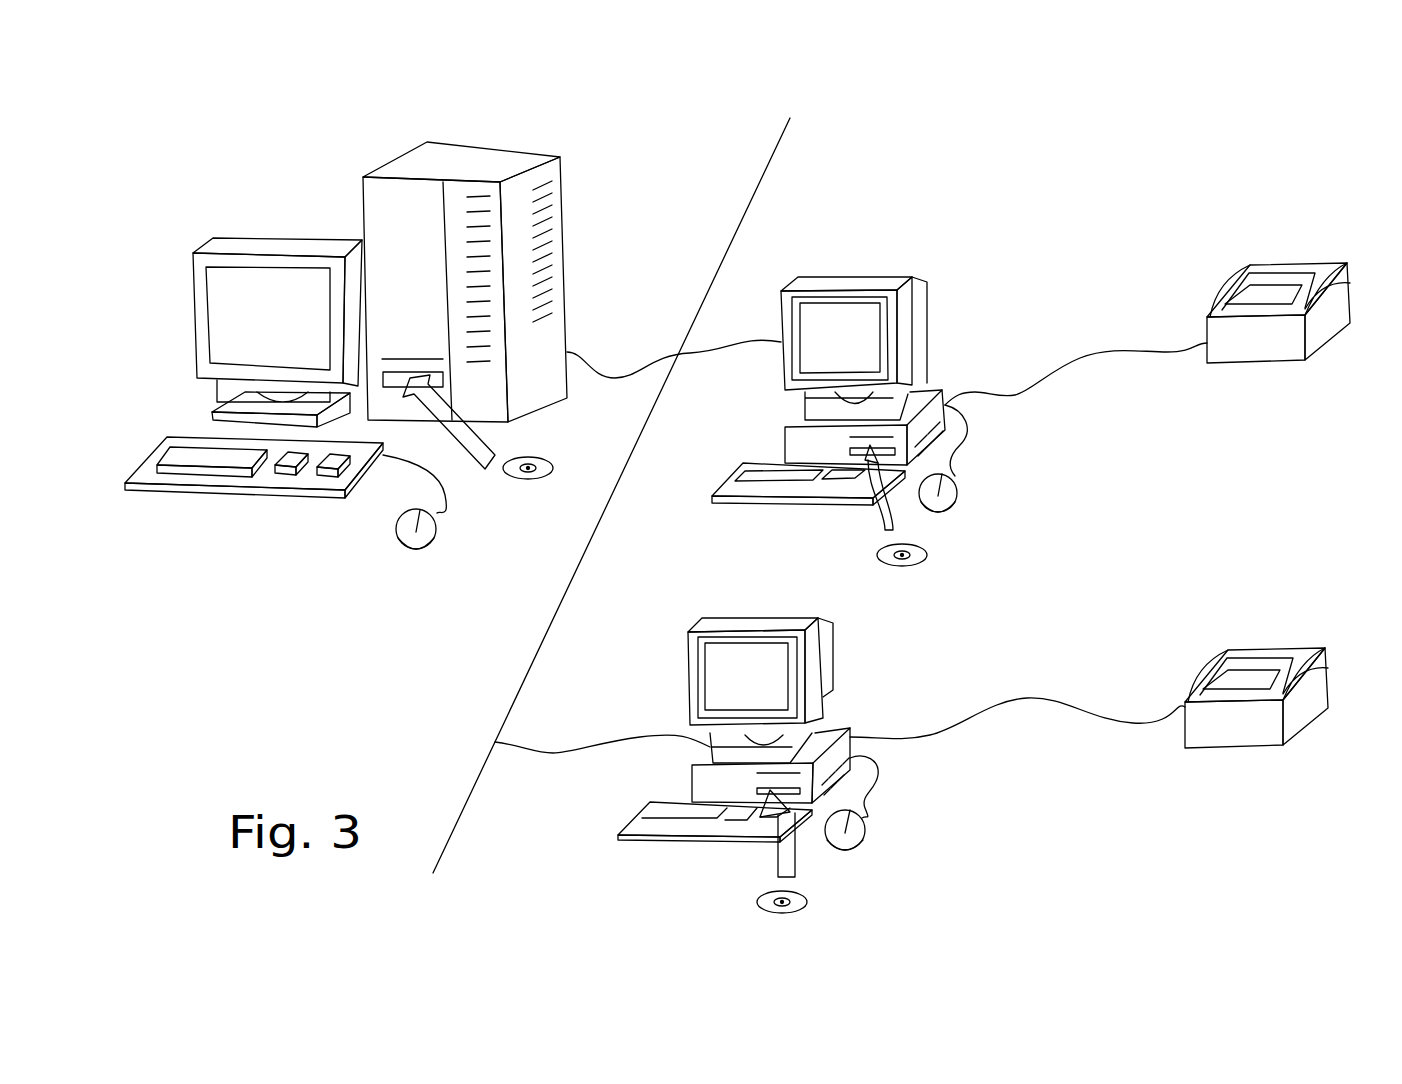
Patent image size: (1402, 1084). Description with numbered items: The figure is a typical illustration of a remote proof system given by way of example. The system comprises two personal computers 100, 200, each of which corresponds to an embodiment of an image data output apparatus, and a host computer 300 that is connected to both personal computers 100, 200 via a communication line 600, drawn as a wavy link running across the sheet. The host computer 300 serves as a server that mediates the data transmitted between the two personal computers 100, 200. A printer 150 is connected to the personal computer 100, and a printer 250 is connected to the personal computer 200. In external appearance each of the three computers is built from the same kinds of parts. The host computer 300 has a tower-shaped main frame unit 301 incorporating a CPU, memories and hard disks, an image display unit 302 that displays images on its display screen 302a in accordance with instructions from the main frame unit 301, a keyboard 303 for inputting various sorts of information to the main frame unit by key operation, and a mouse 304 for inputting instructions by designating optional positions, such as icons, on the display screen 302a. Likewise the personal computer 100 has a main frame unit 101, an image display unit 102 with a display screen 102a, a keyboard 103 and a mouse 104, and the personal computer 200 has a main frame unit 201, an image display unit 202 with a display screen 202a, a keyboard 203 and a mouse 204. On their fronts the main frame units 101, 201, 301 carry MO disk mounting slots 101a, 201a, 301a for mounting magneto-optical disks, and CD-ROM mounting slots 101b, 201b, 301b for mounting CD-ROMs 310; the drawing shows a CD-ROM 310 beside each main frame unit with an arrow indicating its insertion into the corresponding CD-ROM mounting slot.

The host computer 300 is at (268, 195).
The main frame unit 301 is at (470, 153).
The MO disk mounting slot 301a is at (395, 359).
The CD-ROM mounting slot 301b is at (442, 372).
The image display unit 302 is at (203, 243).
The display screen 302a is at (238, 332).
The keyboard 303 is at (183, 498).
The mouse 304 is at (425, 544).
The CD-ROM 310 is at (533, 455).
The communication line 600 is at (783, 146).
The personal computer 100 is at (945, 260).
The main frame unit 101 is at (928, 390).
The MO disk mounting slot 101a is at (853, 437).
The CD-ROM mounting slot 101b is at (850, 452).
The image display unit 102 is at (877, 275).
The display screen 102a is at (828, 325).
The keyboard 103 is at (743, 507).
The mouse 104 is at (935, 515).
The printer 150 is at (1315, 242).
The personal computer 200 is at (853, 682).
The main frame unit 201 is at (832, 730).
The MO disk mounting slot 201a is at (757, 774).
The CD-ROM mounting slot 201b is at (757, 790).
The image display unit 202 is at (690, 628).
The display screen 202a is at (713, 672).
The keyboard 203 is at (637, 828).
The mouse 204 is at (866, 838).
The printer 250 is at (1292, 628).